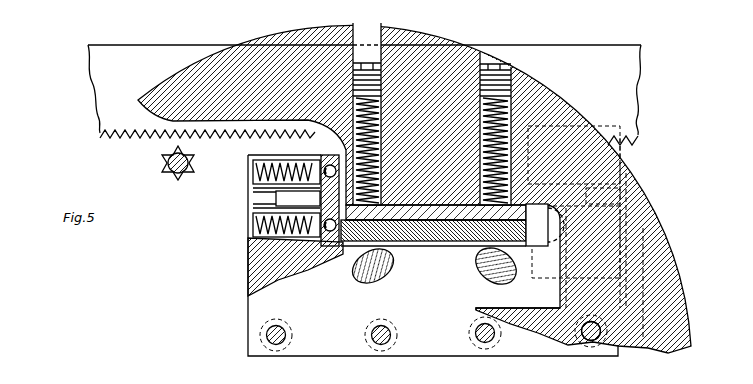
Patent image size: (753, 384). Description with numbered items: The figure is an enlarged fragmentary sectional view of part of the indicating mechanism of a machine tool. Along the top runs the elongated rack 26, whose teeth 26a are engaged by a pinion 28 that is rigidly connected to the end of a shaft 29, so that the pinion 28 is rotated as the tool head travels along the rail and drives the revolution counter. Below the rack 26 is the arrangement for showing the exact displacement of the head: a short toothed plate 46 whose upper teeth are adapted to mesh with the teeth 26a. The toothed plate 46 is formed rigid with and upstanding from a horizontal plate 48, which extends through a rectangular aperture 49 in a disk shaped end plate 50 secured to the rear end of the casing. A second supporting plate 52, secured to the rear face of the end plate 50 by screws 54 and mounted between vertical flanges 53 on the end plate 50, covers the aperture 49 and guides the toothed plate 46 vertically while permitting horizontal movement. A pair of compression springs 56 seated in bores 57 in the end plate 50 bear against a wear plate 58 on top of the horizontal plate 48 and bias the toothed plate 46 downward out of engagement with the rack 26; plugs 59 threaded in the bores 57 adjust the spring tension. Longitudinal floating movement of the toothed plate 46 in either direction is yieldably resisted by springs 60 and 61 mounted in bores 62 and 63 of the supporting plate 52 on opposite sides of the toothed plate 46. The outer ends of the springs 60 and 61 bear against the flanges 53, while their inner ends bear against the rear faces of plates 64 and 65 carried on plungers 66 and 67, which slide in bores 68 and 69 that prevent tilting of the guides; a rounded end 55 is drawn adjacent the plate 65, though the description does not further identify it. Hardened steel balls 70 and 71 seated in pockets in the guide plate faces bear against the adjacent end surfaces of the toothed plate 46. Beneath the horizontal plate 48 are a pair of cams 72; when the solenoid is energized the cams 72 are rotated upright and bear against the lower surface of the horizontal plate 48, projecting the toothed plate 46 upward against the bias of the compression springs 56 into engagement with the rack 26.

The rack 26 is at (96, 102).
The teeth of the rack 26a is at (128, 133).
The pinion 28 is at (178, 165).
The shaft 29 is at (163, 158).
The toothed plate 46 is at (450, 199).
The horizontal plate 48 is at (440, 235).
The rectangular aperture 49 is at (500, 320).
The end plate 50 is at (567, 110).
The supporting plate 52 is at (246, 290).
The vertical flanges 53 is at (650, 233).
The screws 54 is at (258, 322).
The rounded end 55 is at (540, 236).
The compression springs 56 is at (345, 117).
The bores 57 is at (480, 27).
The wear plate 58 is at (393, 204).
The plugs 59 is at (374, 62).
The springs 60 is at (248, 169).
The springs 61 is at (608, 152).
The bores 62 is at (248, 150).
The bores 63 is at (605, 142).
The plate 64 is at (323, 224).
The plate 65 is at (526, 238).
The plunger 66 is at (270, 192).
The plunger 67 is at (603, 196).
The bore 68 is at (248, 189).
The bore 69 is at (628, 175).
The hardened steel ball 70 is at (318, 232).
The hardened steel ball 71 is at (536, 130).
The cams 72 is at (352, 268).